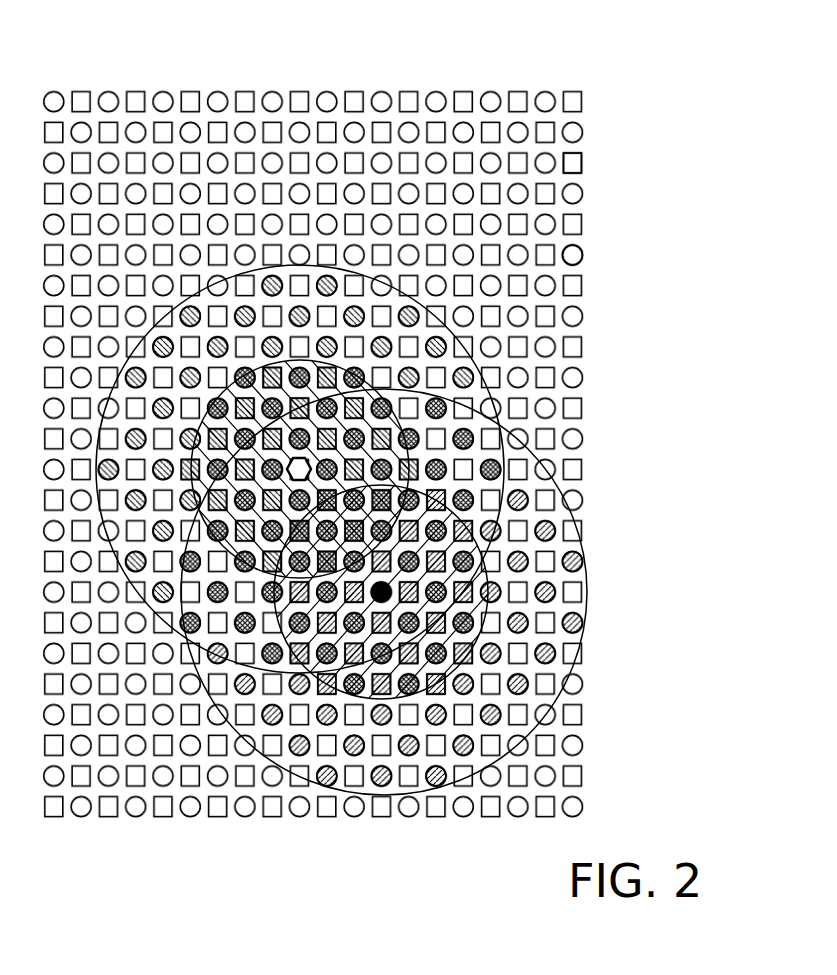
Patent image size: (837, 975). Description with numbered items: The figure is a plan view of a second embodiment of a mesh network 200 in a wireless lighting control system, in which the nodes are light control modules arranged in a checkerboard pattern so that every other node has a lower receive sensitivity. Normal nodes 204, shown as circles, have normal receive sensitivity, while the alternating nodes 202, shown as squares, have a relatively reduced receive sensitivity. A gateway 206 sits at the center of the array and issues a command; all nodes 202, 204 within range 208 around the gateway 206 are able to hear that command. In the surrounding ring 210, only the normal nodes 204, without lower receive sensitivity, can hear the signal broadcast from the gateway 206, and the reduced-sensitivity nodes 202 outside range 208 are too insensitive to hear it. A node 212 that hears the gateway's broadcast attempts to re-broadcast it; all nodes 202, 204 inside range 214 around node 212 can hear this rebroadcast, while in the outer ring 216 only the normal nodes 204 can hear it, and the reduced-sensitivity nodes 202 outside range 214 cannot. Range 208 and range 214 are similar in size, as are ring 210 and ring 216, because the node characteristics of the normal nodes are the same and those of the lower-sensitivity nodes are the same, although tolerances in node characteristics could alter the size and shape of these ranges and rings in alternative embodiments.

The mesh network 200 is at (668, 65).
The nodes having reduced receive sensitivity 202 is at (582, 163).
The normal nodes 204 is at (583, 253).
The gateway 206 is at (312, 470).
The range 208 is at (395, 421).
The ring 210 is at (258, 267).
The rebroadcast node 212 is at (380, 657).
The range 214 is at (477, 637).
The ring 216 is at (560, 697).